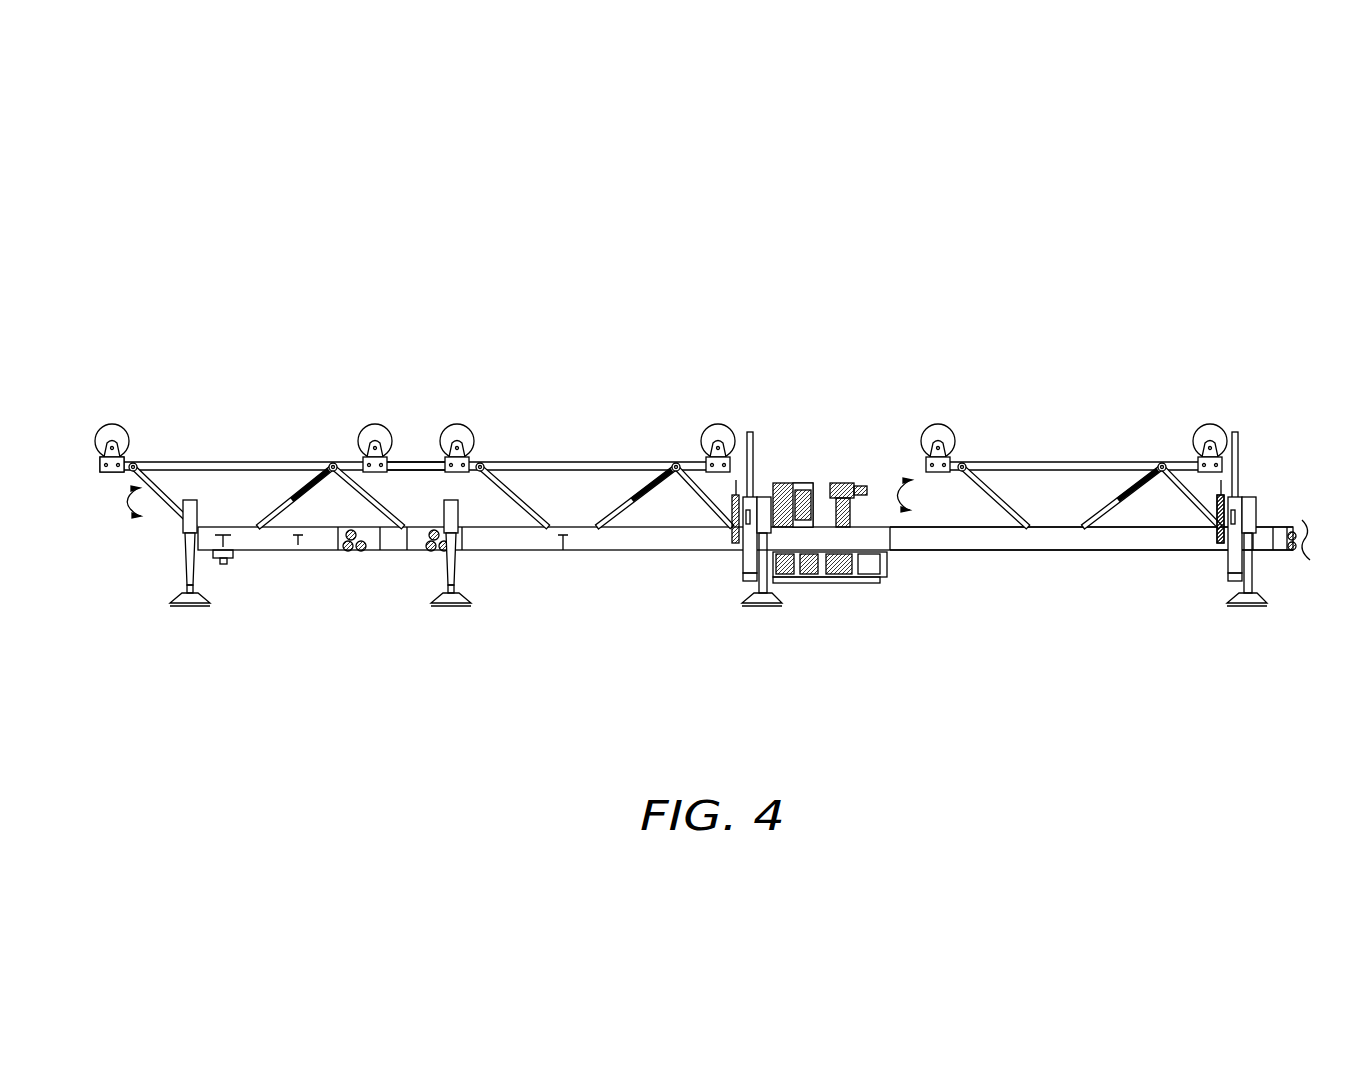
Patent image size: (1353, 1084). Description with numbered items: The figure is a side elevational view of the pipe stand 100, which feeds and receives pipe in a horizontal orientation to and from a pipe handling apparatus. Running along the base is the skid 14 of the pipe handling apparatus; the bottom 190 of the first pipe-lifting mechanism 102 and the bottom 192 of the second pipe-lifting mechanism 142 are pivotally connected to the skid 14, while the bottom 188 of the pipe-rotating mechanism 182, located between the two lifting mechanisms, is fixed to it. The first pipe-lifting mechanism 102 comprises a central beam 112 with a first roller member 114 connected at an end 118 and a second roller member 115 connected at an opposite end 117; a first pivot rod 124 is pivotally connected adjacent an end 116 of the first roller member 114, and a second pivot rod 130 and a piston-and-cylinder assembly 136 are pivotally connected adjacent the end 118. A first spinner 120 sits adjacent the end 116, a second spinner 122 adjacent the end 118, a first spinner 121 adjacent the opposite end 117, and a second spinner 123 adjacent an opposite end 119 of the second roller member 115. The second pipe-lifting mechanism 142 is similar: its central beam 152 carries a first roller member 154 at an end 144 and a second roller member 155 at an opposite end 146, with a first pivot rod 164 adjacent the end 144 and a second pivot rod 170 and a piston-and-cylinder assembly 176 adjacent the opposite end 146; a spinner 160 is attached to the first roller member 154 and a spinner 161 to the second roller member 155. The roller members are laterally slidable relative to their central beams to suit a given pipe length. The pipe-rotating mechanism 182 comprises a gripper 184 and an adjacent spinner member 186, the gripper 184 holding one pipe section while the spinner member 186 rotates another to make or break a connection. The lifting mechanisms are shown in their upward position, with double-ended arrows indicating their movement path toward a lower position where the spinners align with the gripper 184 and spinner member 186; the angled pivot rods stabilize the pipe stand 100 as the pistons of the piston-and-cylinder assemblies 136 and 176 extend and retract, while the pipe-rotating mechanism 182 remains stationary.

The pipe stand 100 is at (418, 206).
The first pipe-lifting mechanism 102 is at (589, 360).
The second pipe-lifting mechanism 142 is at (1066, 367).
The skid 14 is at (517, 535).
The first pivot rod 164 is at (983, 490).
The first roller member 114 is at (243, 472).
The central beam 112 is at (428, 462).
The second roller member 115 is at (556, 470).
The end of first roller member 116 is at (110, 474).
The opposite end of central beam 117 is at (478, 463).
The end of central beam 118 is at (352, 470).
The opposite end of second roller member 119 is at (700, 462).
The first spinner 120 is at (120, 425).
The first spinner 121 is at (460, 426).
The second spinner 122 is at (372, 425).
The second spinner 123 is at (718, 425).
The first pivot rod 124 is at (157, 507).
The second pivot rod 130 is at (370, 553).
The piston-and-cylinder assembly 136 is at (300, 507).
The bottom of first pipe-lifting mechanism 190 is at (416, 519).
The pipe-rotating mechanism 182 is at (807, 413).
The gripper 184 is at (785, 483).
The spinner member 186 is at (845, 483).
The bottom of pipe-rotating mechanism 188 is at (893, 572).
The central beam 152 is at (1052, 465).
The first roller member 154 is at (957, 470).
The end of central beam 144 is at (958, 462).
The second roller member 155 is at (1180, 465).
The spinner 160 is at (937, 425).
The spinner 161 is at (1210, 425).
The piston-and-cylinder assembly 176 is at (1103, 512).
The opposite end of central beam 146 is at (1155, 487).
The second pivot rod 170 is at (1192, 497).
The bottom of second pipe-lifting mechanism 192 is at (1201, 533).